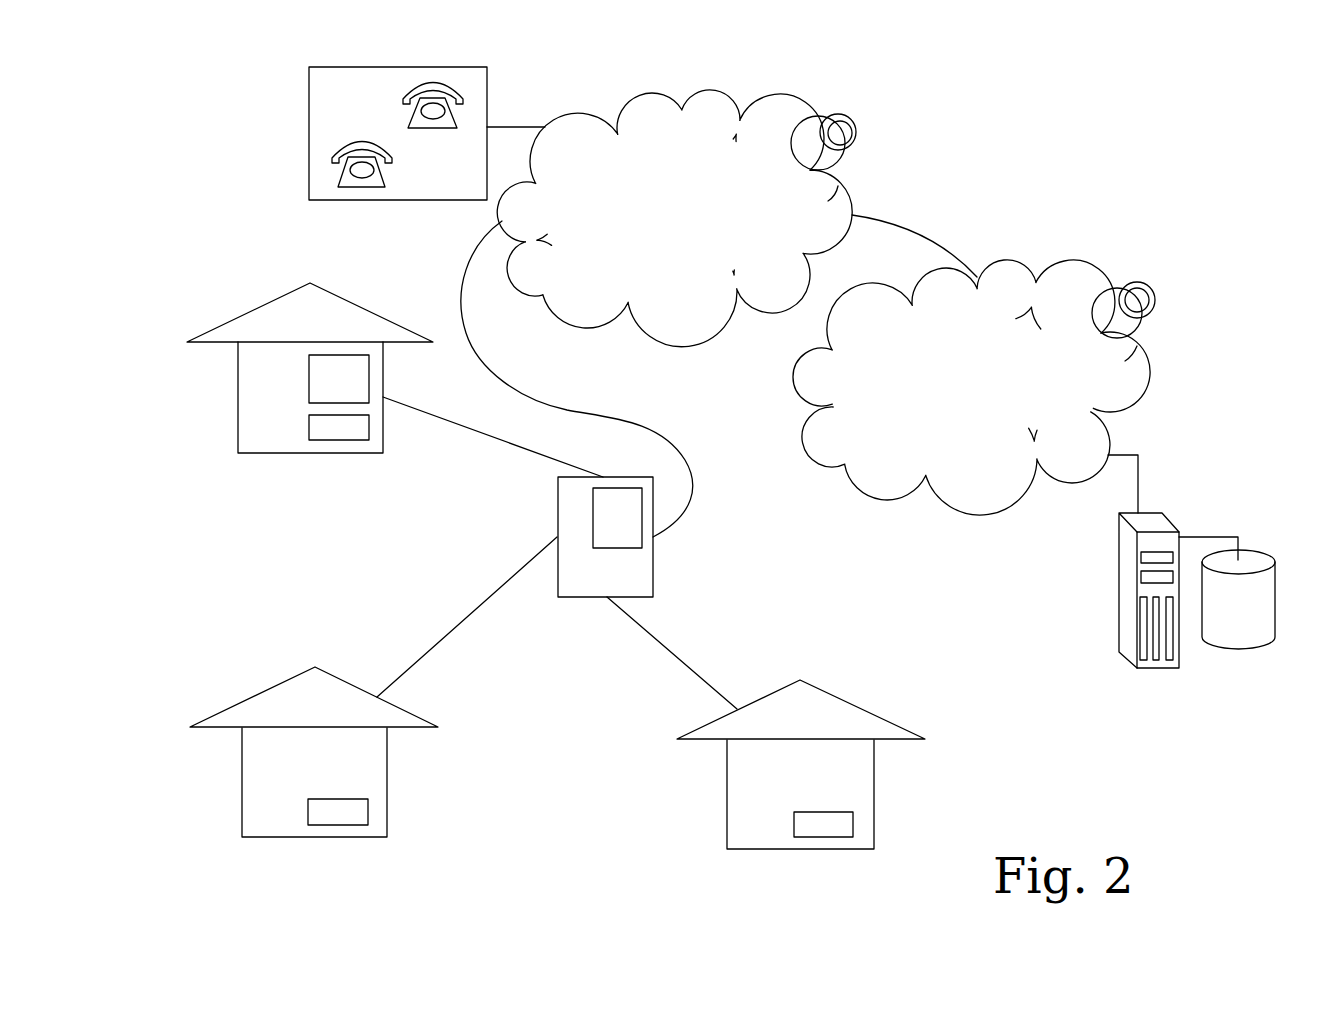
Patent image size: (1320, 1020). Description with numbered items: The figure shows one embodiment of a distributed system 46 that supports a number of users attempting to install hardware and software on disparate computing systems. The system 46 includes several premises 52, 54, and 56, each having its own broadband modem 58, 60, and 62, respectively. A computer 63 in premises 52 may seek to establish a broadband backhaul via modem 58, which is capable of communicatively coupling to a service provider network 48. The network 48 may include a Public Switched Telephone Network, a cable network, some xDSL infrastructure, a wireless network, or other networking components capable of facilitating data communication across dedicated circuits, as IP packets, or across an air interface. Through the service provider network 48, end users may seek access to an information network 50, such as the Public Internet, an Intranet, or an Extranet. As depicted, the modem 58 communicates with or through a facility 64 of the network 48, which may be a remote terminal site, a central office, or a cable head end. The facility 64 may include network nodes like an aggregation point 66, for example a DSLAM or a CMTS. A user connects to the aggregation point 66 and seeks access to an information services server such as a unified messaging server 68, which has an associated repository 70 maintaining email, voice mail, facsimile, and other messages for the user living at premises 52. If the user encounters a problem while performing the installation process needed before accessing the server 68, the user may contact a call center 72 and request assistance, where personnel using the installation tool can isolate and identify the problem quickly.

The distributed system 46 is at (1082, 173).
The service provider network 48 is at (676, 218).
The information network 50 is at (974, 387).
The premises 52 is at (298, 368).
The premises 54 is at (303, 752).
The premises 56 is at (789, 764).
The broadband modem 58 is at (296, 421).
The broadband modem 60 is at (301, 805).
The broadband modem 62 is at (785, 818).
The computer 63 is at (339, 379).
The facility 64 is at (605, 537).
The aggregation point 66 is at (617, 518).
The unified messaging server 68 is at (1116, 540).
The repository 70 is at (1238, 599).
The call center 72 is at (305, 152).